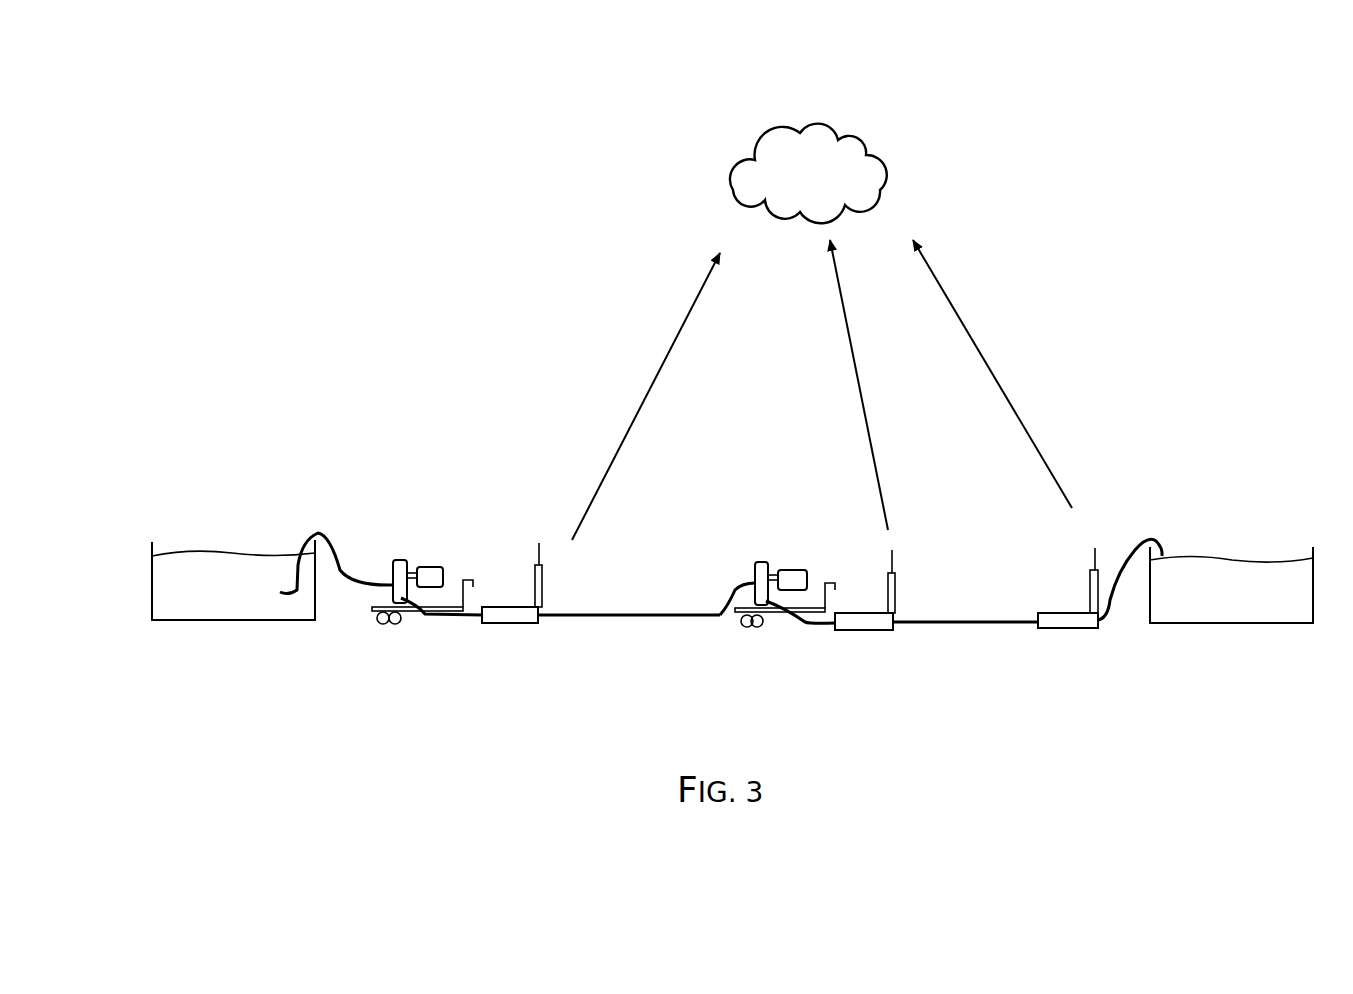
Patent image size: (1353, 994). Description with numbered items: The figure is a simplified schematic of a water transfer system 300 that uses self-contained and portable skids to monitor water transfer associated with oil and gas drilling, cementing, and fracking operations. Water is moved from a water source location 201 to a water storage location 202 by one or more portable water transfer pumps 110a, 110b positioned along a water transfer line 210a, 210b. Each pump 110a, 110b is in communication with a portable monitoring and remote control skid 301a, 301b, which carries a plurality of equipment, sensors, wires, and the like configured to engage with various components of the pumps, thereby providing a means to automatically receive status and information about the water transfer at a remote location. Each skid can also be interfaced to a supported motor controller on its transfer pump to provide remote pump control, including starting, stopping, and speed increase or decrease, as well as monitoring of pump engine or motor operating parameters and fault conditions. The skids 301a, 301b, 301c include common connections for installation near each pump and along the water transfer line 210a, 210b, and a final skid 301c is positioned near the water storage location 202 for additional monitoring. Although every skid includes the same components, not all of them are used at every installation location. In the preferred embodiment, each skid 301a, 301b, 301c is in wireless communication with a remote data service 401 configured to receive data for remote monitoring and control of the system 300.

The water transfer system 300 is at (262, 121).
The remote data service 401 is at (783, 130).
The water source location 201 is at (197, 552).
The water storage location 202 is at (1215, 558).
The portable water transfer pump 110a is at (384, 519).
The portable water transfer pump 110b is at (738, 547).
The portable monitoring and remote control skid 301a is at (507, 533).
The portable monitoring and remote control skid 301b is at (855, 545).
The final skid 301c is at (1054, 547).
The water transfer line 210a is at (603, 618).
The water transfer line 210b is at (972, 624).